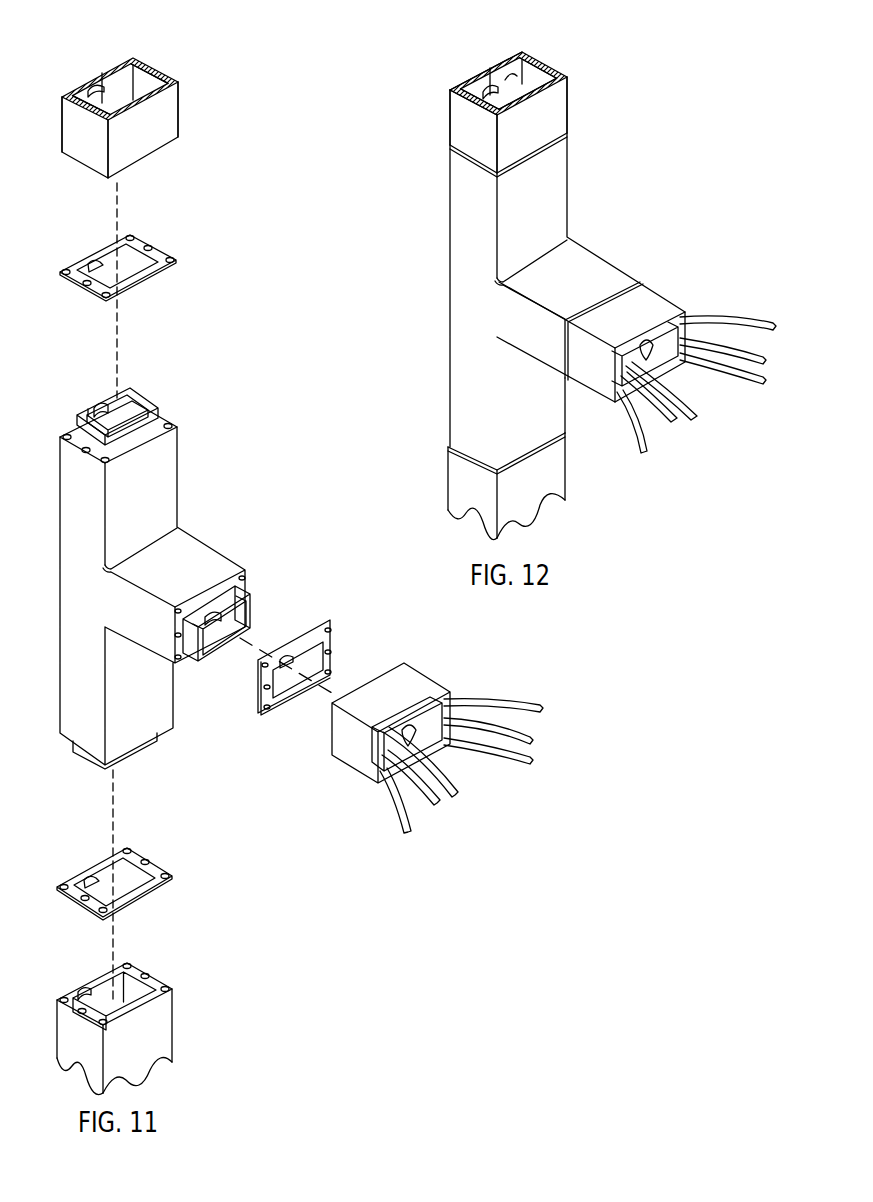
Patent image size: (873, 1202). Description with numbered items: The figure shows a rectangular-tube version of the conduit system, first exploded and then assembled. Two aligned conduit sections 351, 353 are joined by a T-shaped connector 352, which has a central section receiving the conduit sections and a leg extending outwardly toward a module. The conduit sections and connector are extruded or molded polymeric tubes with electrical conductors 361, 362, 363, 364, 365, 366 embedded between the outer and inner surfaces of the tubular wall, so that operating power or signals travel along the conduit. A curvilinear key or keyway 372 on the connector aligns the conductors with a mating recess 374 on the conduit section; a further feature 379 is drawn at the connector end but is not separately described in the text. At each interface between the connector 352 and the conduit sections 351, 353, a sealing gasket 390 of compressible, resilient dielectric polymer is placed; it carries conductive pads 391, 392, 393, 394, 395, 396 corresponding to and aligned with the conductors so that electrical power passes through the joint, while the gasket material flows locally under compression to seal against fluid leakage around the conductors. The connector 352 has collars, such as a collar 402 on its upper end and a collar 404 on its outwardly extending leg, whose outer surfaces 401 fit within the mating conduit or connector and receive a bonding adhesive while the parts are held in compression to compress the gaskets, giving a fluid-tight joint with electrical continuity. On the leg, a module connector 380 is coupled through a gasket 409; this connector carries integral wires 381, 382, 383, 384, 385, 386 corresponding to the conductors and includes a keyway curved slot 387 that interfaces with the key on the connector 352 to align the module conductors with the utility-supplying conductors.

In FIG. 11, the conduit section 351 is at (165, 1027).
In FIG. 12, the conduit section 351 is at (545, 500).
In FIG. 11, the T-shaped connector 352 is at (178, 500).
In FIG. 12, the T-shaped connector 352 is at (568, 207).
In FIG. 11, the conduit section 353 is at (160, 130).
In FIG. 12, the conduit section 353 is at (548, 120).
In FIG. 11, the conductor 361 is at (133, 58).
In FIG. 12, the conductor 361 is at (523, 53).
In FIG. 11, the conductor 362 is at (150, 72).
In FIG. 12, the conductor 362 is at (545, 75).
In FIG. 11, the conductor 363 is at (180, 83).
In FIG. 12, the conductor 363 is at (568, 78).
In FIG. 11, the conductor 364 is at (100, 112).
In FIG. 12, the conductor 364 is at (487, 108).
In FIG. 11, the conductor 365 is at (72, 100).
In FIG. 12, the conductor 365 is at (463, 98).
In FIG. 11, the conductor 366 is at (65, 93).
In FIG. 12, the conductor 366 is at (455, 92).
In FIG. 11, the mating keyway 372 is at (90, 414).
In FIG. 11, the mating recess 374 is at (100, 80).
In FIG. 12, the mating recess 374 is at (490, 70).
In FIG. 11, the key projection 379 is at (118, 400).
In FIG. 12, the key projection 379 is at (508, 72).
In FIG. 11, the connector 380 is at (347, 762).
In FIG. 12, the connector 380 is at (601, 386).
In FIG. 11, the wire 381 is at (505, 700).
In FIG. 12, the wire 381 is at (740, 320).
In FIG. 11, the wire 382 is at (528, 745).
In FIG. 12, the wire 382 is at (760, 366).
In FIG. 11, the wire 383 is at (520, 766).
In FIG. 12, the wire 383 is at (757, 384).
In FIG. 11, the wire 384 is at (403, 832).
In FIG. 12, the wire 384 is at (640, 455).
In FIG. 11, the wire 385 is at (436, 805).
In FIG. 12, the wire 385 is at (668, 424).
In FIG. 11, the wire 386 is at (455, 795).
In FIG. 12, the wire 386 is at (694, 420).
In FIG. 11, the keyway curved slot 387 is at (414, 725).
In FIG. 12, the keyway curved slot 387 is at (652, 345).
In FIG. 11, the sealing gasket 390 is at (105, 245).
In FIG. 12, the sealing gasket 390 is at (465, 160).
In FIG. 11, the conductive pad 391 is at (131, 235).
In FIG. 11, the conductive pad 392 is at (151, 248).
In FIG. 11, the conductive pad 393 is at (176, 260).
In FIG. 11, the conductive pad 394 is at (106, 298).
In FIG. 11, the conductive pad 395 is at (85, 283).
In FIG. 11, the conductive pad 396 is at (66, 272).
In FIG. 11, the outer surface 401 is at (132, 428).
In FIG. 11, the collar 402 is at (150, 405).
In FIG. 11, the collar 404 is at (252, 605).
In FIG. 11, the gasket 409 is at (322, 625).
In FIG. 12, the gasket 409 is at (597, 300).